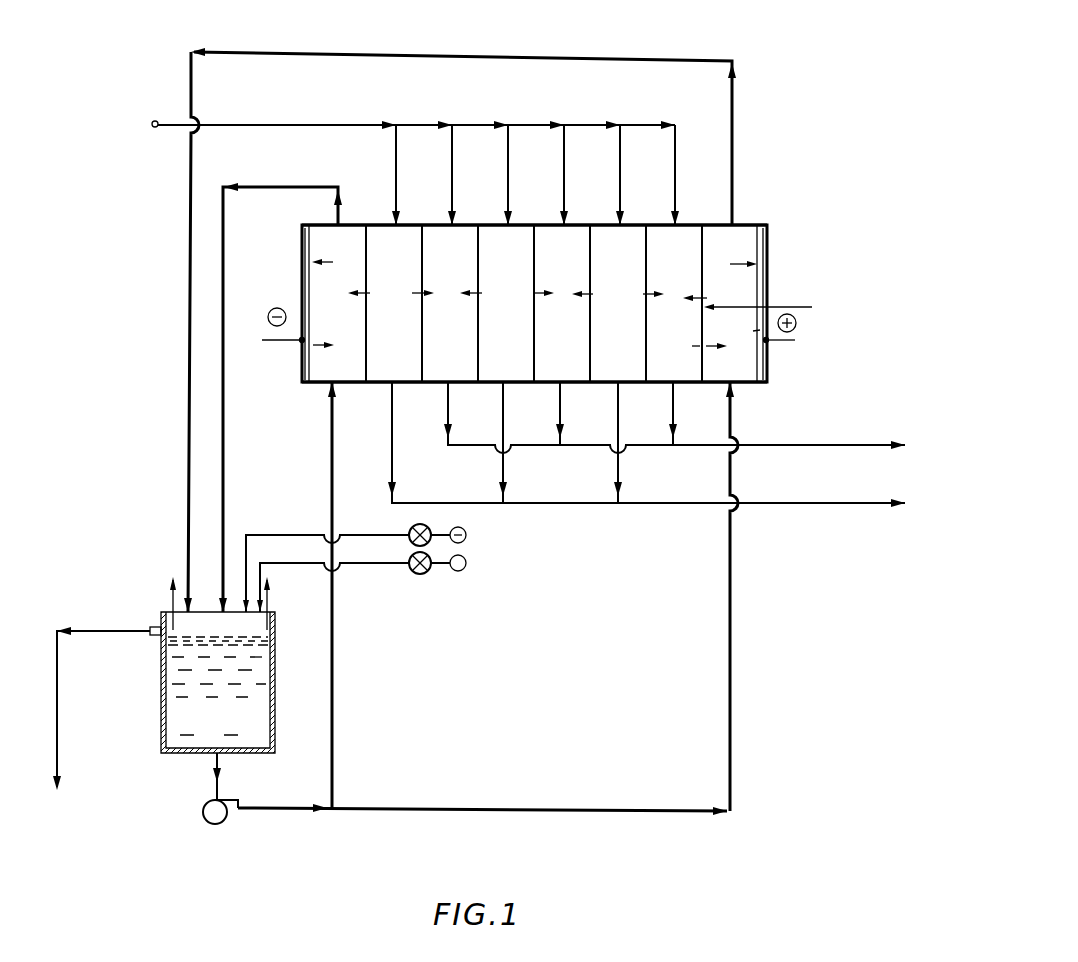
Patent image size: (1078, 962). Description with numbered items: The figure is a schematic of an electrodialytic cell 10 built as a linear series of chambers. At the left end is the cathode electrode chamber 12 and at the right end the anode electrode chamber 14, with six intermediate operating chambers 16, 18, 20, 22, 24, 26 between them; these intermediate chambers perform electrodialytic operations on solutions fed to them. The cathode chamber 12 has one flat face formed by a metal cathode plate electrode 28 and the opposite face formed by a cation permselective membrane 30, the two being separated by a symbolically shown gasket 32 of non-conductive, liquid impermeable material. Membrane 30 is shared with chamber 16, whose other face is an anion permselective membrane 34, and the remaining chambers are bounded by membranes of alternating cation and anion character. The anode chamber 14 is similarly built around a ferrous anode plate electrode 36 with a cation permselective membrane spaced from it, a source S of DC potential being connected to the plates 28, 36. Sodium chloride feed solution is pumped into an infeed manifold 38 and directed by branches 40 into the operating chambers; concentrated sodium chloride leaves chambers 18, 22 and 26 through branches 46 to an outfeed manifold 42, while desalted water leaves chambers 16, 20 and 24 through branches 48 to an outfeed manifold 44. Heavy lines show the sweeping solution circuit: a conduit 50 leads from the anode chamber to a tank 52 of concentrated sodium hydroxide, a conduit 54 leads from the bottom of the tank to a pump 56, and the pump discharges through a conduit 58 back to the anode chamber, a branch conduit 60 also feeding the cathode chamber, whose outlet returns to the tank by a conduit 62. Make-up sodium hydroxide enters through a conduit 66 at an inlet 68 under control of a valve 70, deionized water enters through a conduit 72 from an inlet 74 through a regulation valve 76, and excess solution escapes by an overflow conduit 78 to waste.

The electrodialytic cell 10 is at (756, 198).
The cathode electrode chamber 12 is at (322, 385).
The anode electrode chamber 14 is at (745, 374).
The intermediate operating chamber 16 is at (408, 224).
The intermediate operating chamber 18 is at (464, 224).
The intermediate operating chamber 20 is at (520, 224).
The intermediate operating chamber 22 is at (574, 224).
The intermediate operating chamber 24 is at (630, 224).
The intermediate operating chamber 26 is at (687, 224).
The metal cathode plate electrode 28 is at (302, 276).
The cation permselective membrane 30 is at (365, 342).
The gasket 32 is at (386, 386).
The anion permselective membrane 34 is at (420, 342).
The ferrous anode plate electrode 36 is at (768, 258).
The infeed manifold 38 is at (287, 122).
The branches 40 is at (395, 166).
The outfeed manifold 42 is at (748, 448).
The outfeed manifold 44 is at (757, 506).
The branches 46 is at (446, 418).
The branches 48 is at (388, 463).
The conduit 50 is at (557, 57).
The tank 52 is at (161, 700).
The conduit 54 is at (213, 778).
The pump 56 is at (208, 826).
The conduit 58 is at (640, 813).
The branch conduit 60 is at (335, 729).
The conduit 62 is at (226, 466).
The conduit 66 is at (289, 534).
The inlet 68 is at (466, 528).
The valve 70 is at (412, 527).
The conduit 72 is at (375, 566).
The inlet 74 is at (455, 575).
The regulation valve 76 is at (417, 578).
The overflow conduit 78 is at (131, 628).